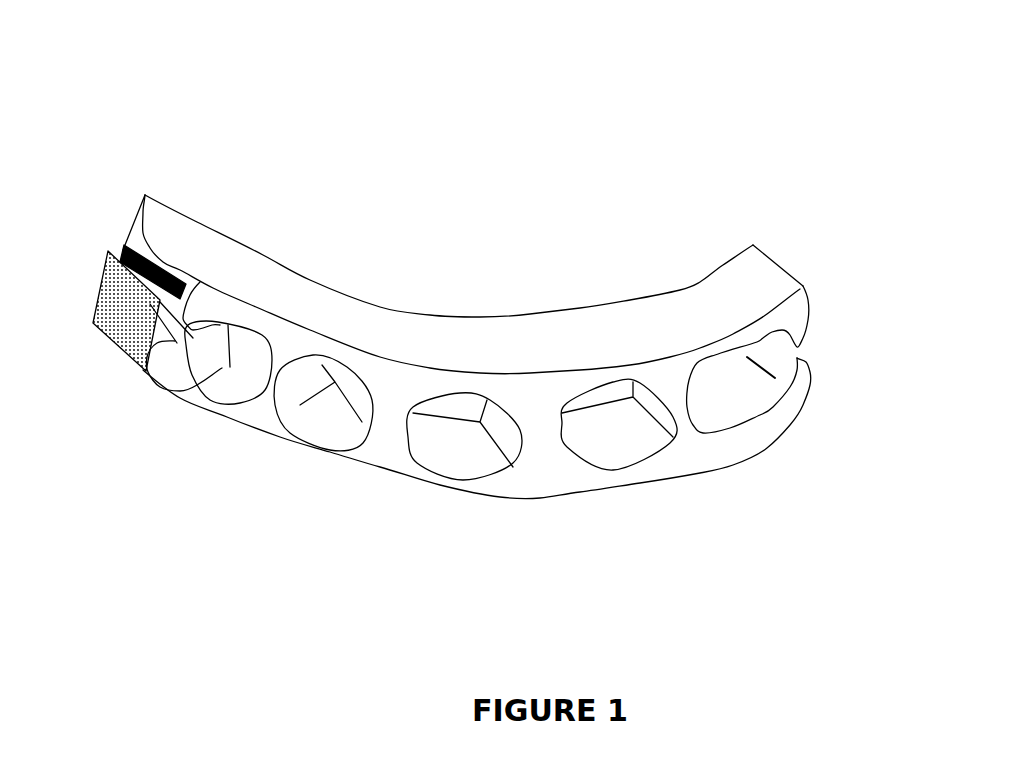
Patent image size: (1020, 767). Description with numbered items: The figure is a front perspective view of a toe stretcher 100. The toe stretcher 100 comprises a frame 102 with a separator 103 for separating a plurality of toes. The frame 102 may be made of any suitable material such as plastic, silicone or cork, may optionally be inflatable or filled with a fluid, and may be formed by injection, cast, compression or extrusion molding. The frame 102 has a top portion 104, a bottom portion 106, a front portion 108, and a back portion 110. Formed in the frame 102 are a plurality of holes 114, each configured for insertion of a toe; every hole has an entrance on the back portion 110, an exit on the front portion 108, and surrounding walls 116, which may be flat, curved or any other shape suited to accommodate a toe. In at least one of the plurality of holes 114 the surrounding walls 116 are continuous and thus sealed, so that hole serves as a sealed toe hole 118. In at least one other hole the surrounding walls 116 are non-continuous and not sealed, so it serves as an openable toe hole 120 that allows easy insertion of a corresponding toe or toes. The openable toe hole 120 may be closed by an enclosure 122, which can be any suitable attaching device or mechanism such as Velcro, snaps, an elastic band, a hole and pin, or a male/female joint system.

The toe stretcher 100 is at (380, 268).
The frame 102 is at (815, 247).
The separator 103 is at (538, 444).
The top portion 104 is at (533, 350).
The bottom portion 106 is at (640, 485).
The front portion 108 is at (695, 448).
The back portion 110 is at (682, 287).
The plurality of holes 114 is at (242, 367).
The surrounding walls 116 is at (732, 387).
The sealed toe hole 118 is at (307, 410).
The openable toe hole 120 is at (214, 378).
The enclosure 122 is at (117, 313).